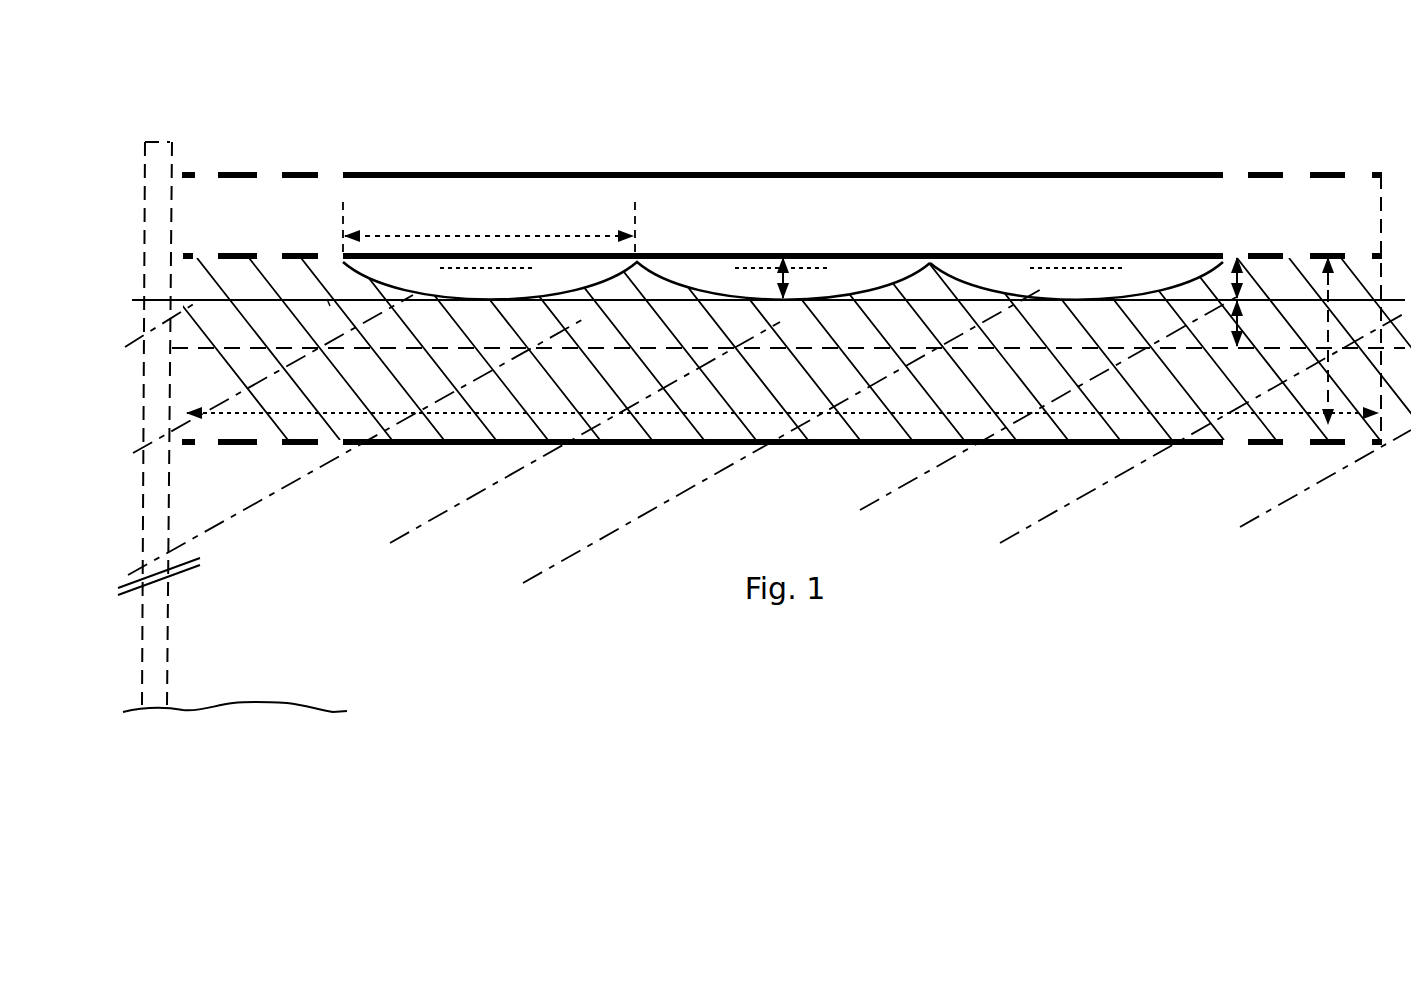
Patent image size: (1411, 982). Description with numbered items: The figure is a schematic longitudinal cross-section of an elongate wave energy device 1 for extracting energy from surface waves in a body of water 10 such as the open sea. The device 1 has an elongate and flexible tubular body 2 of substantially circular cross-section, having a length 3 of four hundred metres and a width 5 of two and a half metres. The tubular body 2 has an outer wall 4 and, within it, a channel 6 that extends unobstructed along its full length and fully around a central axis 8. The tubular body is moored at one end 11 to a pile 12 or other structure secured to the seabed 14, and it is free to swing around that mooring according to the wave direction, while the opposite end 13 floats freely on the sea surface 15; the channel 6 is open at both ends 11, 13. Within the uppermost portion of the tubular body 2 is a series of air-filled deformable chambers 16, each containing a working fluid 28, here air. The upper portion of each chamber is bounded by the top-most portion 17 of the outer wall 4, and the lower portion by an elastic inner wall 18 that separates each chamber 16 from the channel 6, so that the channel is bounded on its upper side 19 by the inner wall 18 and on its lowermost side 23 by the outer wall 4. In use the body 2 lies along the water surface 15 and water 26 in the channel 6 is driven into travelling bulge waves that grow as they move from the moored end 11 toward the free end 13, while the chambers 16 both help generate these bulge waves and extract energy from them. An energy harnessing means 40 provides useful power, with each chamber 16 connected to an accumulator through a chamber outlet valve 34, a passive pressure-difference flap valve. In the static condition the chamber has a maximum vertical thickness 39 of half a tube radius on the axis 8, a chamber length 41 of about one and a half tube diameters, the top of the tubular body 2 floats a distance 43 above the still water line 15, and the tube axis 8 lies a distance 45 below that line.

The wave energy device 1 is at (467, 155).
The tubular body 2 is at (580, 447).
The length 3 is at (1192, 440).
The outer wall 4 is at (887, 300).
The width 5 is at (1330, 400).
The channel 6 is at (733, 370).
The central axis 8 is at (400, 348).
The body of water 10 is at (270, 286).
The end 11 is at (182, 228).
The pile 12 is at (176, 150).
The opposite end 13 is at (1378, 206).
The seabed 14 is at (263, 702).
The sea surface 15 is at (327, 299).
The air-filled deformable chambers 16 is at (578, 268).
The top-most portion of the outer wall 17 is at (703, 262).
The elastic inner wall 18 is at (560, 298).
The upper side of the channel 19 is at (1027, 310).
The lowermost side of the channel 23 is at (1093, 428).
The water 26 is at (976, 391).
The working fluid 28 is at (488, 295).
The chamber outlet valve 34 is at (492, 268).
The maximum vertical thickness of the chamber 39 is at (827, 263).
The energy harnessing means 40 is at (793, 167).
The chamber length 41 is at (388, 235).
The distance of tube top above still water line 43 is at (1250, 275).
The distance of tube axis below still water line 45 is at (1250, 332).